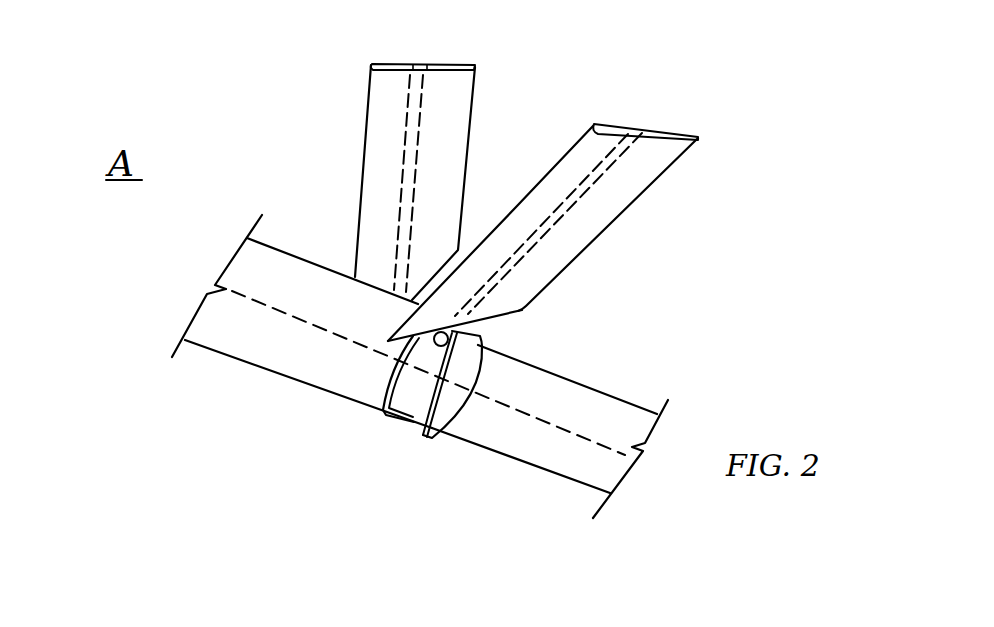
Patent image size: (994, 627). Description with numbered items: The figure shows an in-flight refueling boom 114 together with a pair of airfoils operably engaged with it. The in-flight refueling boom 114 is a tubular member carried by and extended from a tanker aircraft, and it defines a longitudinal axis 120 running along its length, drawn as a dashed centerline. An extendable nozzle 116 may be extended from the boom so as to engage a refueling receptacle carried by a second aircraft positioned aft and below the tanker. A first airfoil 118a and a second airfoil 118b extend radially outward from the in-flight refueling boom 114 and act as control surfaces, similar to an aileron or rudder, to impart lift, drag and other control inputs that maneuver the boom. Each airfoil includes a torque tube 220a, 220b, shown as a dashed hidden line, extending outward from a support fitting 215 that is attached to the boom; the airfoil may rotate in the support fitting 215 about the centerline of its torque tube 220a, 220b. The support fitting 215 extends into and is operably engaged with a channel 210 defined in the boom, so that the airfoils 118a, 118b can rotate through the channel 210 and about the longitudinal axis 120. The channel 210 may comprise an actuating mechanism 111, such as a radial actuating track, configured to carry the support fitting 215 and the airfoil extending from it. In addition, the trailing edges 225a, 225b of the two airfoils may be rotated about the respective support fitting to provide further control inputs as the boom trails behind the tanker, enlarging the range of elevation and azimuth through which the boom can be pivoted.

The actuating mechanism 111 is at (413, 400).
The in-flight refueling boom 114 is at (272, 352).
The extendable nozzle 116 is at (537, 435).
The first airfoil 118a is at (570, 237).
The second airfoil 118b is at (437, 217).
The longitudinal axis 120 is at (238, 302).
The channel 210 is at (403, 405).
The support fitting 215 is at (447, 338).
The torque tube 220a is at (607, 182).
The torque tube 220b is at (471, 130).
The trailing edge 225a is at (560, 272).
The trailing edge 225b is at (422, 115).